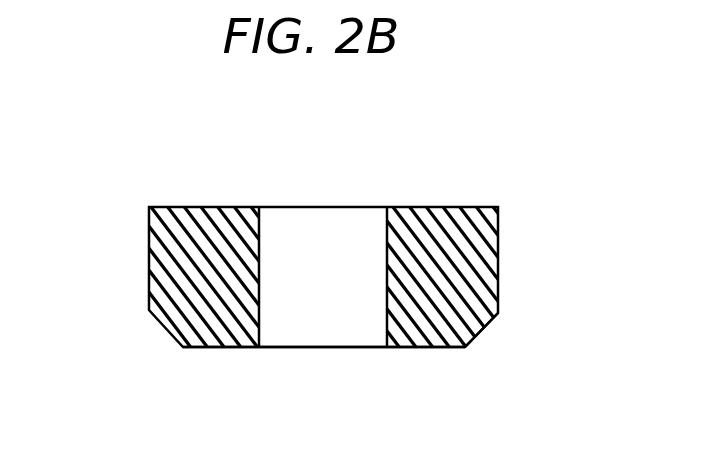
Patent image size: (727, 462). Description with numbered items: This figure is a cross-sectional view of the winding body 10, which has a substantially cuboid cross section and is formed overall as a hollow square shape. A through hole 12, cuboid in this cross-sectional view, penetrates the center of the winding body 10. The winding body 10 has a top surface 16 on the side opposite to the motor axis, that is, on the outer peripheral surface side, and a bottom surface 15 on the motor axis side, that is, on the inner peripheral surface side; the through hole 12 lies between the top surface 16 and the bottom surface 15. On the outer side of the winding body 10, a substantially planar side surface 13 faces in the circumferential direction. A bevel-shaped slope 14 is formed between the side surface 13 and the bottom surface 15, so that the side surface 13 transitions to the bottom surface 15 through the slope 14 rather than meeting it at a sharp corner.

The winding body 10 is at (116, 149).
The through hole 12 is at (338, 232).
The side surface 13 is at (498, 243).
The slope 14 is at (482, 332).
The bottom surface 15 is at (407, 347).
The top surface 16 is at (193, 207).